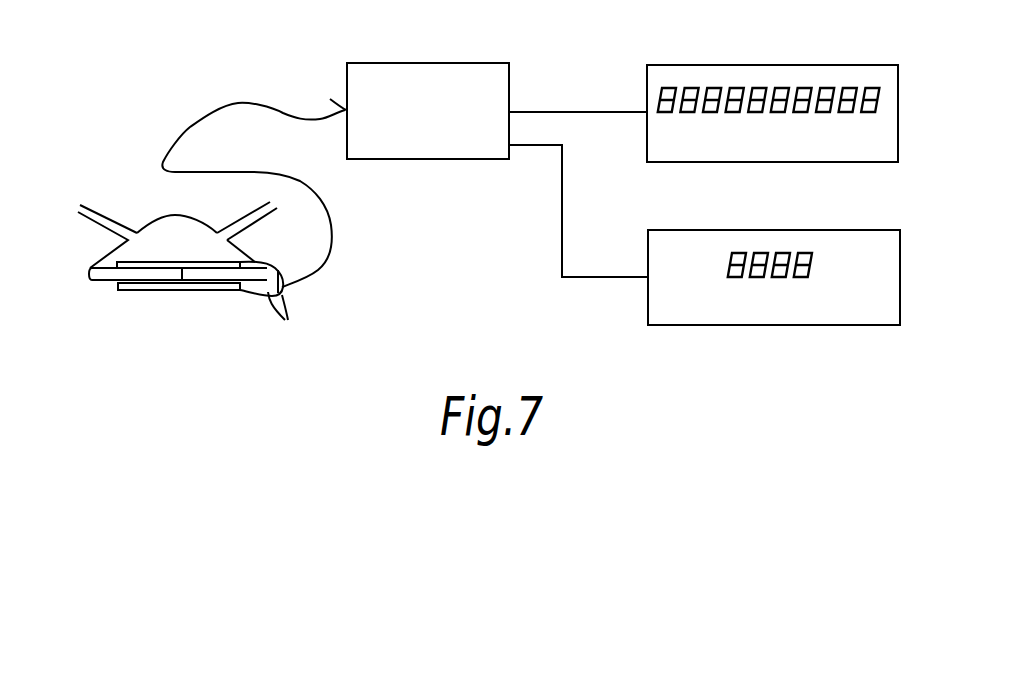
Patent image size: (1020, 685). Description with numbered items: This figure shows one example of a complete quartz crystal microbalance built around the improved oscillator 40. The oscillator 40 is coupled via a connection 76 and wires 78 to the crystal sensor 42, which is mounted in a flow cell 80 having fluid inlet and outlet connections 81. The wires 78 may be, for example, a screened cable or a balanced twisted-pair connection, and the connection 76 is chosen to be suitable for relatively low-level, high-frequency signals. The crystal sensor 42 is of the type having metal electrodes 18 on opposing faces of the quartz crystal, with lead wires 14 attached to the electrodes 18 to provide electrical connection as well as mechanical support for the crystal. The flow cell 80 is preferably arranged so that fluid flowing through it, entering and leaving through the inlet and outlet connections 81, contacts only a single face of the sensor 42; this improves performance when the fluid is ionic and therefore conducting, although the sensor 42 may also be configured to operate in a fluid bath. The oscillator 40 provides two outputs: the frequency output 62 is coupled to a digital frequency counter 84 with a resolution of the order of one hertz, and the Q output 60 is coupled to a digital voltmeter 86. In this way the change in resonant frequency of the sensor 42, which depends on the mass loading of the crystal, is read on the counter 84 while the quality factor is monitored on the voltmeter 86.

The lead wires 14 is at (275, 303).
The metal electrodes 18 is at (178, 290).
The oscillator 40 is at (440, 122).
The crystal sensor 42 is at (95, 285).
The Q output 60 is at (510, 146).
The frequency output 62 is at (510, 110).
The connection 76 is at (330, 99).
The wires 78 is at (212, 112).
The flow cell 80 is at (184, 212).
The fluid inlet and outlet connections 81 is at (93, 203).
The digital frequency counter 84 is at (837, 63).
The digital voltmeter 86 is at (839, 230).